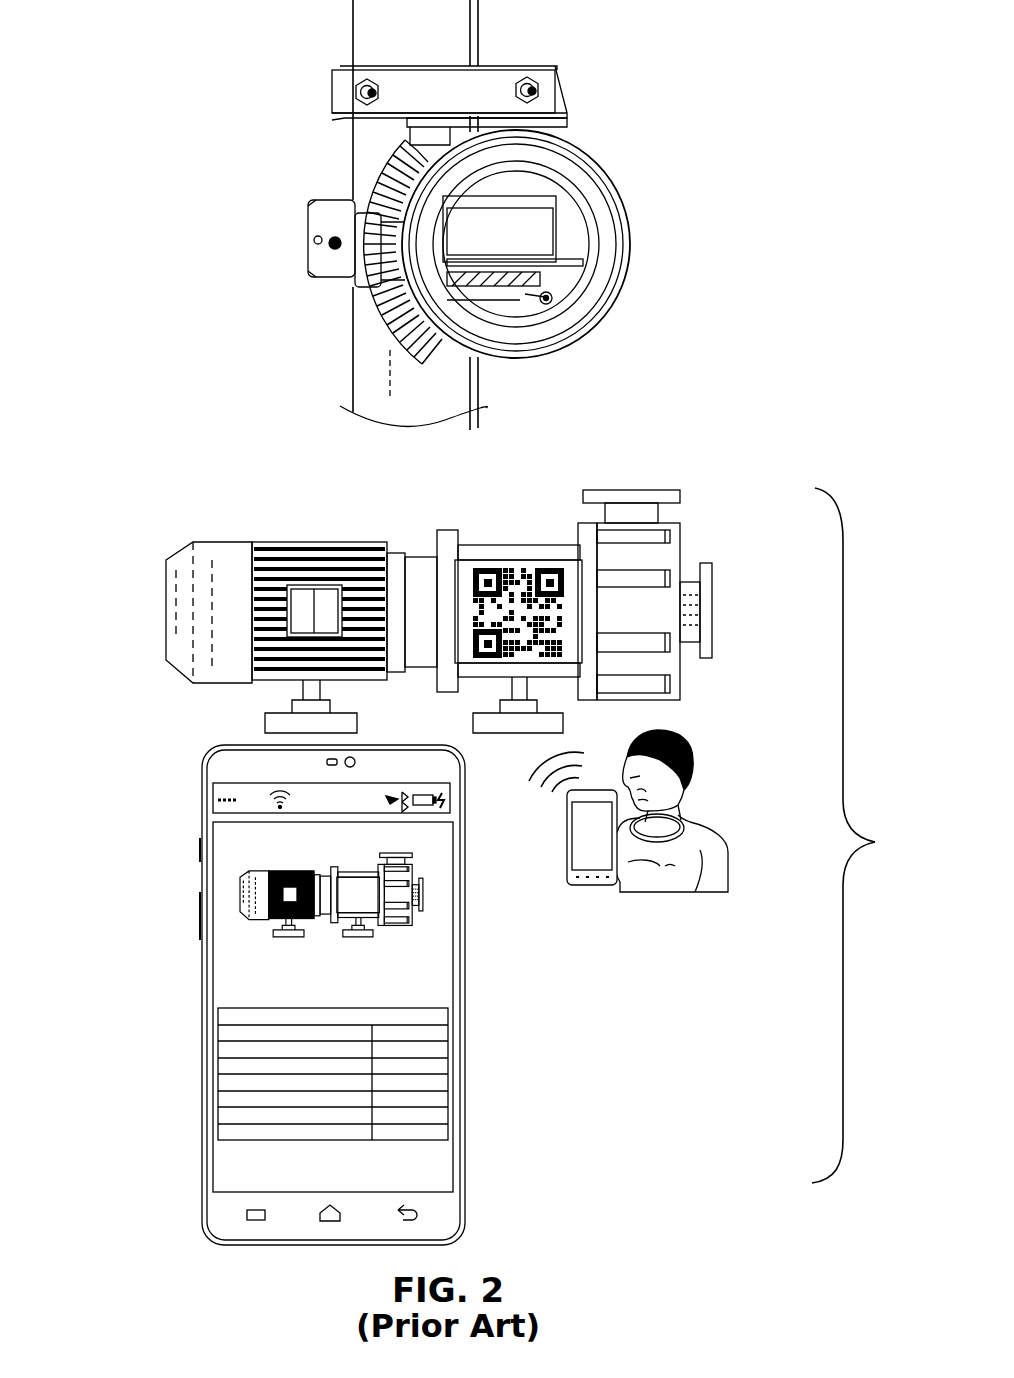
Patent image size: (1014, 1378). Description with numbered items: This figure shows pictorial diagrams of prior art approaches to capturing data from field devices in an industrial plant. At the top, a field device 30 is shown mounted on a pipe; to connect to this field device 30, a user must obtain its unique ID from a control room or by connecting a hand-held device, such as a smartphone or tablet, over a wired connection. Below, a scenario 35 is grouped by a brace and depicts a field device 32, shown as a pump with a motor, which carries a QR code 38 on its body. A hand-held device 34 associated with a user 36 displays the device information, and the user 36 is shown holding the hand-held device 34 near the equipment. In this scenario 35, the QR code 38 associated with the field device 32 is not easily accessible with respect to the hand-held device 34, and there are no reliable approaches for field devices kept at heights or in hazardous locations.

The field device 30 is at (652, 141).
The field device 32 is at (397, 604).
The hand-held device 34 is at (185, 992).
The scenario 35 is at (864, 835).
The user 36 is at (720, 812).
The QR code 38 is at (510, 567).